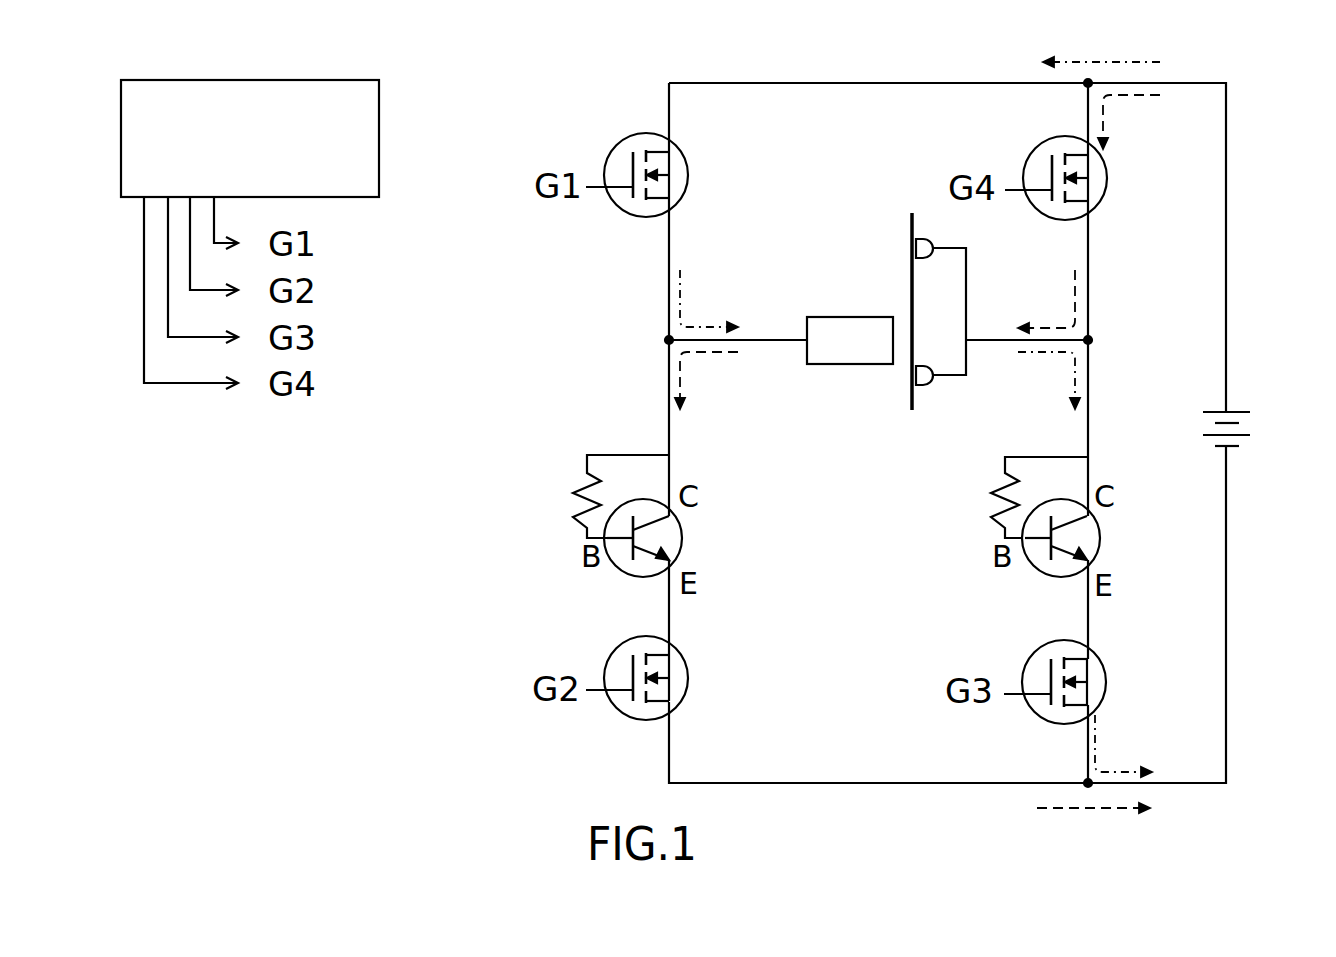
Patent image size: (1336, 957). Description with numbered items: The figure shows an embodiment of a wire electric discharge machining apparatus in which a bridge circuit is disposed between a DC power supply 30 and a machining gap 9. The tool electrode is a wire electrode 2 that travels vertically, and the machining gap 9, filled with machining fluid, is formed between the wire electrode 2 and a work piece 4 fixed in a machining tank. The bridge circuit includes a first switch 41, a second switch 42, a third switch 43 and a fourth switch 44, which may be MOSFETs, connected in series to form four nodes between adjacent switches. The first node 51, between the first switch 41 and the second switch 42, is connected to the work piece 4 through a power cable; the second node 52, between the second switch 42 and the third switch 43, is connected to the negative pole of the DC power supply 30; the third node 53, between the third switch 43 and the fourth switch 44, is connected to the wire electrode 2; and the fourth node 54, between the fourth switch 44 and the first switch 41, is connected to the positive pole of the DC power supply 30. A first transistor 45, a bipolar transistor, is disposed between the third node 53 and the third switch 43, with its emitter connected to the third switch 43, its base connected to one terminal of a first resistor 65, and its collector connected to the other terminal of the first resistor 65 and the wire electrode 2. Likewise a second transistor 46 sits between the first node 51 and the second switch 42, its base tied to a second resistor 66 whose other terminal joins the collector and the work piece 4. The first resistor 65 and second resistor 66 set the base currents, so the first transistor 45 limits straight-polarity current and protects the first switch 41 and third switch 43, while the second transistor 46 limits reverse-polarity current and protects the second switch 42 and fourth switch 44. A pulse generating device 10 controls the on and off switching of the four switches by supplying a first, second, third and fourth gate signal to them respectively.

The pulse generating device 10 is at (380, 97).
The first switch 41 is at (688, 166).
The second switch 42 is at (687, 676).
The third switch 43 is at (1098, 654).
The fourth switch 44 is at (1107, 190).
The first transistor 45 is at (1101, 549).
The second transistor 46 is at (683, 540).
The first resistor 65 is at (996, 484).
The second resistor 66 is at (572, 480).
The first node 51 is at (665, 332).
The second node 52 is at (1078, 779).
The third node 53 is at (1093, 346).
The fourth node 54 is at (1084, 87).
The work piece 4 is at (818, 316).
The wire electrode 2 is at (910, 248).
The machining gap 9 is at (900, 354).
The DC power supply 30 is at (1237, 406).